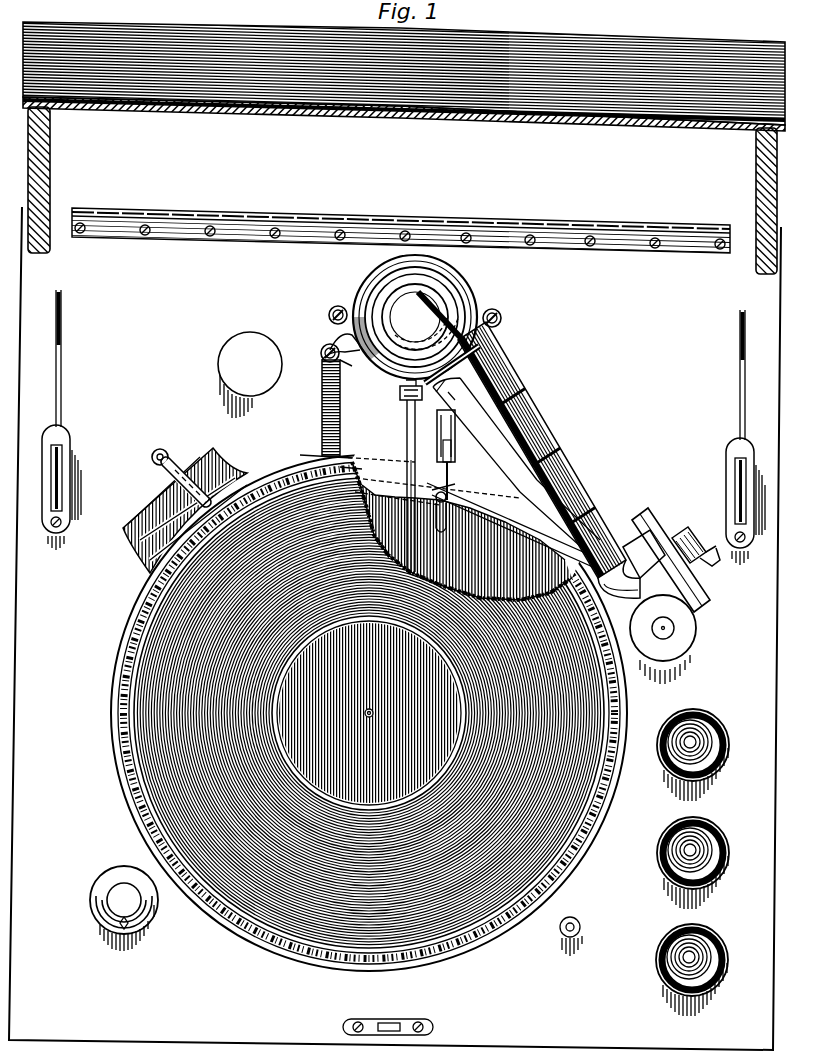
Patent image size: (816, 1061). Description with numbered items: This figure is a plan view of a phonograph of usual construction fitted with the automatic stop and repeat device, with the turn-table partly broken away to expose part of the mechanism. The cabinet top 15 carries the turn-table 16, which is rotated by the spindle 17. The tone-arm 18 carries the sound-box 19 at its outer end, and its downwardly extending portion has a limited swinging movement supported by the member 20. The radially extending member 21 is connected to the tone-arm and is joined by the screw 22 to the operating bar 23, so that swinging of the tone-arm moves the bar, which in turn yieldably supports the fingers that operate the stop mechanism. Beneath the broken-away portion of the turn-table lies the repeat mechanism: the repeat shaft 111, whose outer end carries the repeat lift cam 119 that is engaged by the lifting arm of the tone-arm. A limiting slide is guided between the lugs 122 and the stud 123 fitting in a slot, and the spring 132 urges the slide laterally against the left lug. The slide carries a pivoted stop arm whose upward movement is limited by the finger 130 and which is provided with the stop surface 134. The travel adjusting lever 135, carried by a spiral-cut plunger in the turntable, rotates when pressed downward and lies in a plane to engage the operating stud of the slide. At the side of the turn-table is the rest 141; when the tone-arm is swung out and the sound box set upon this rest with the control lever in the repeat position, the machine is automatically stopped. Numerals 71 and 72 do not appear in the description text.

The cabinet top 15 is at (524, 998).
The turn-table 16 is at (580, 852).
The spindle 17 is at (372, 716).
The tone-arm 18 is at (540, 445).
The sound-box 19 is at (647, 515).
The member 20 is at (470, 308).
The radially extending member 21 is at (343, 342).
The screw 22 is at (321, 356).
The operating bar 23 is at (341, 395).
The pin 71 is at (160, 449).
The lever 72 is at (180, 470).
The repeat shaft 111 is at (404, 450).
The repeat lift cam 119 is at (402, 410).
The lugs 122 is at (435, 435).
The stud 123 is at (470, 528).
The finger 130 is at (432, 463).
The spring 132 is at (515, 410).
The stop surface 134 is at (485, 435).
The travel adjusting lever 135 is at (460, 494).
The rest 141 is at (706, 600).